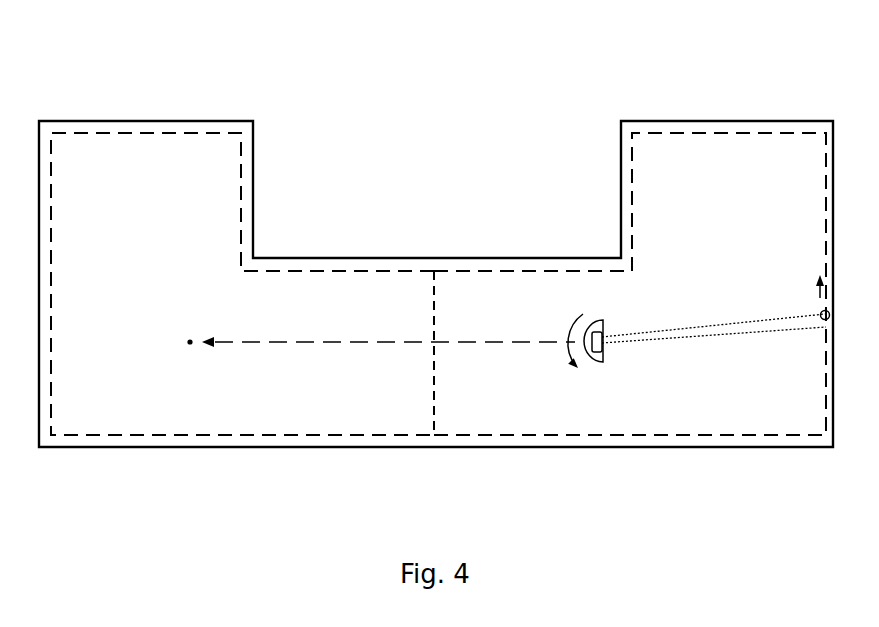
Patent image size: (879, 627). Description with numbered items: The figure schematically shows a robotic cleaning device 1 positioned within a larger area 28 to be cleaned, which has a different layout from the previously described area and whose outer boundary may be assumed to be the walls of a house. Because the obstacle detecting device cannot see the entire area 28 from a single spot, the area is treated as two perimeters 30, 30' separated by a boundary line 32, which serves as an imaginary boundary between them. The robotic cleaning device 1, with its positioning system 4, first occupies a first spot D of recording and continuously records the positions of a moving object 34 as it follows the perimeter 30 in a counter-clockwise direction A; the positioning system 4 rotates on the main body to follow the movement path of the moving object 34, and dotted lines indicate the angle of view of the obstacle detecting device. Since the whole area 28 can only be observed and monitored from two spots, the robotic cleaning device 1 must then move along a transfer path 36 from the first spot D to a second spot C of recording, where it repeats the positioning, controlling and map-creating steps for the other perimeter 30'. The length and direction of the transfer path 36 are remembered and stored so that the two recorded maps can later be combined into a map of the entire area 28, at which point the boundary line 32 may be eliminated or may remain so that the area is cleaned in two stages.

The robotic cleaning device 1 is at (607, 378).
The positioning system 4 is at (605, 330).
The area 28 is at (383, 136).
The perimeter 30 is at (629, 274).
The other perimeter 30' is at (242, 239).
The boundary line 32 is at (435, 300).
The moving object 34 is at (812, 310).
The transfer path 36 is at (310, 344).
The counter-clockwise direction A is at (818, 288).
The second spot of recording C is at (190, 344).
The first spot of recording D is at (585, 381).